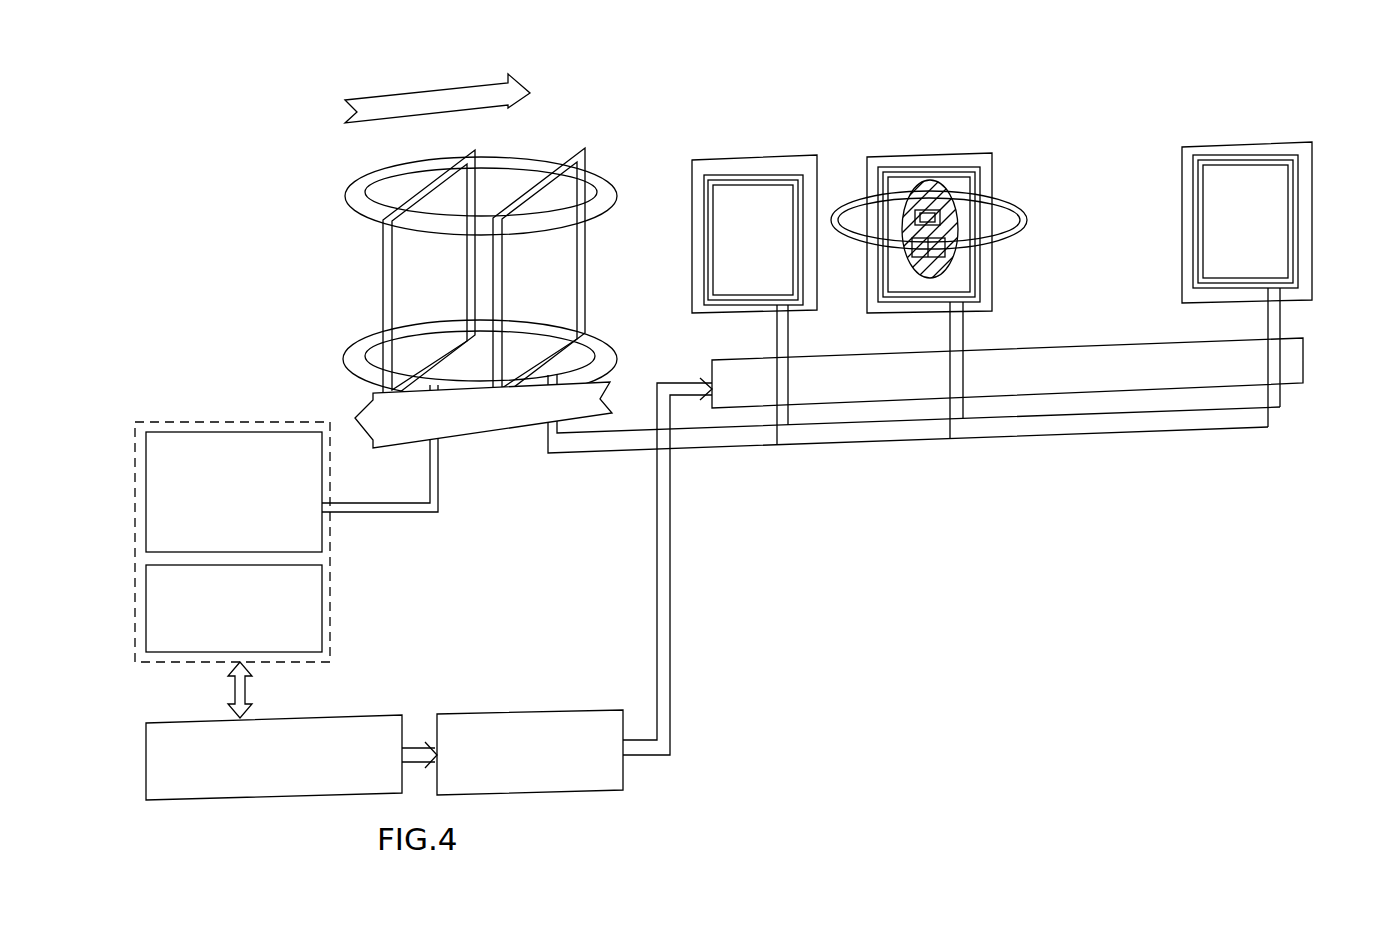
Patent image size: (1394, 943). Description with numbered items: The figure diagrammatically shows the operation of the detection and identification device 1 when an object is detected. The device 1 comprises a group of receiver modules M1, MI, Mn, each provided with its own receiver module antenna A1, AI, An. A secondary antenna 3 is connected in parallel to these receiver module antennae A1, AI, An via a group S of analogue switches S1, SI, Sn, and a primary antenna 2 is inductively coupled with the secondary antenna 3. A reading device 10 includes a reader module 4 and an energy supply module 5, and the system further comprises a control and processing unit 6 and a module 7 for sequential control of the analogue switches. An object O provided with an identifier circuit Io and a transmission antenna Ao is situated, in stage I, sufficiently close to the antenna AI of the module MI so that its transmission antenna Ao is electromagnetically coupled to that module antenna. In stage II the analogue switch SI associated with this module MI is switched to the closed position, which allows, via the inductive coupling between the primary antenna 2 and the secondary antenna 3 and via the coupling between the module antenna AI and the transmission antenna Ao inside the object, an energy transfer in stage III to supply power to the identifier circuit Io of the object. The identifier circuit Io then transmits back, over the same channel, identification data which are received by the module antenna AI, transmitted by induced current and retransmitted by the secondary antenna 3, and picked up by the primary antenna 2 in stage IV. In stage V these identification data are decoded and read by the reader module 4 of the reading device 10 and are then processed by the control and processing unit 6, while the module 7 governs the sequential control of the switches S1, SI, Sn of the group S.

The detection and identification device 1 is at (953, 510).
The primary antenna 2 is at (408, 176).
The secondary antenna 3 is at (530, 178).
The reader module 4 is at (190, 432).
The energy supply module 5 is at (183, 652).
The control and processing unit 6 is at (224, 800).
The module for sequential control of the analogue switches 7 is at (497, 713).
The reading device 10 is at (333, 576).
The receiver module M1 is at (712, 160).
The receiver module antenna A1 is at (726, 175).
The receiver module MI is at (890, 167).
The receiver module antenna AI is at (900, 178).
The receiver module Mn is at (1205, 145).
The receiver module antenna An is at (1216, 155).
The object O is at (957, 157).
The transmission antenna Ao is at (972, 183).
The identifier circuit Io is at (980, 252).
The group of analogue switches S is at (1305, 366).
The analogue switch S1 is at (764, 392).
The analogue switch SI is at (940, 390).
The analogue switch Sn is at (1256, 373).
The stage I is at (1056, 80).
The stage II is at (862, 449).
The stage III is at (437, 87).
The stage IV is at (483, 430).
The stage V is at (157, 398).